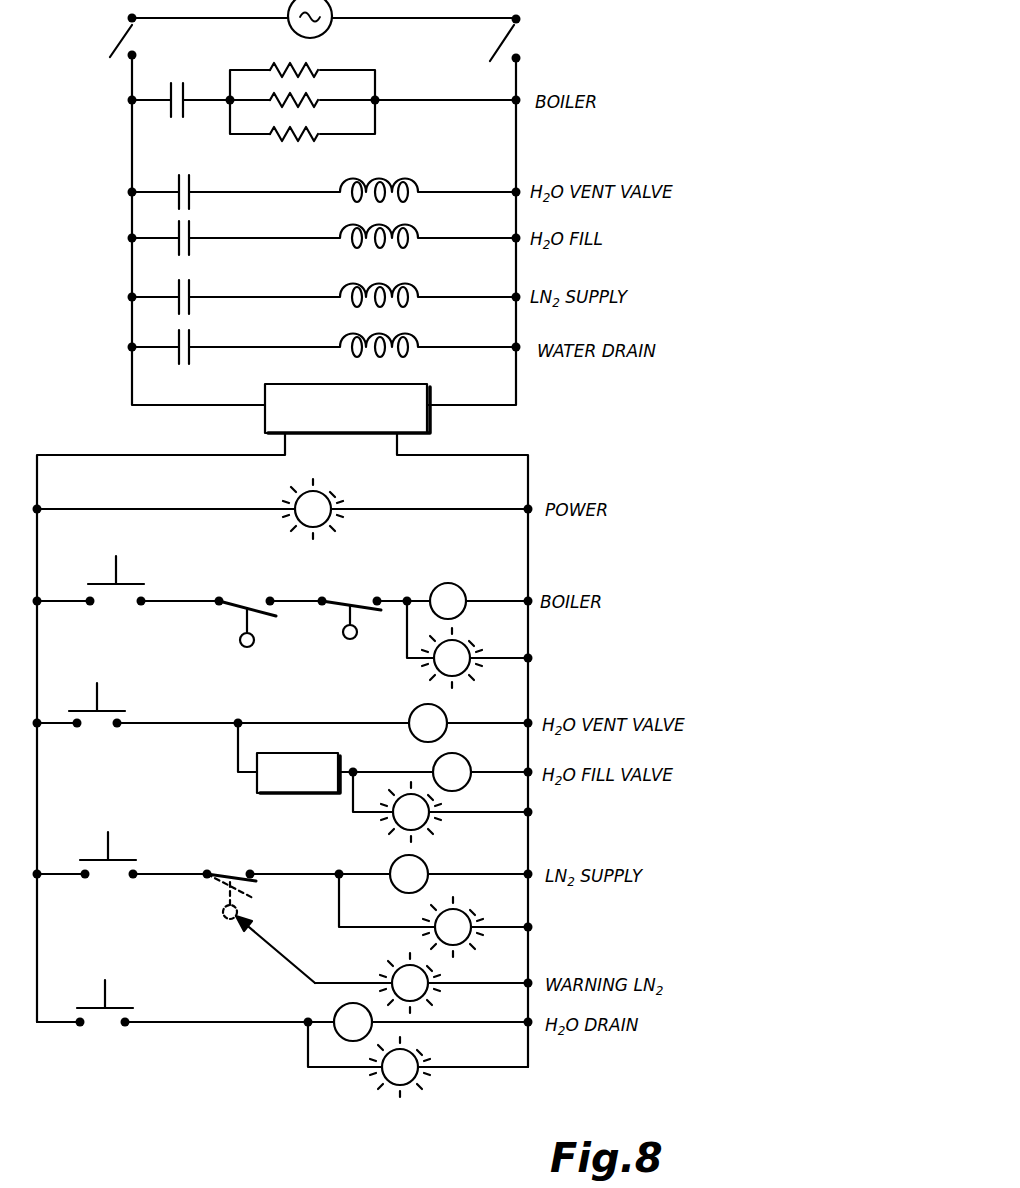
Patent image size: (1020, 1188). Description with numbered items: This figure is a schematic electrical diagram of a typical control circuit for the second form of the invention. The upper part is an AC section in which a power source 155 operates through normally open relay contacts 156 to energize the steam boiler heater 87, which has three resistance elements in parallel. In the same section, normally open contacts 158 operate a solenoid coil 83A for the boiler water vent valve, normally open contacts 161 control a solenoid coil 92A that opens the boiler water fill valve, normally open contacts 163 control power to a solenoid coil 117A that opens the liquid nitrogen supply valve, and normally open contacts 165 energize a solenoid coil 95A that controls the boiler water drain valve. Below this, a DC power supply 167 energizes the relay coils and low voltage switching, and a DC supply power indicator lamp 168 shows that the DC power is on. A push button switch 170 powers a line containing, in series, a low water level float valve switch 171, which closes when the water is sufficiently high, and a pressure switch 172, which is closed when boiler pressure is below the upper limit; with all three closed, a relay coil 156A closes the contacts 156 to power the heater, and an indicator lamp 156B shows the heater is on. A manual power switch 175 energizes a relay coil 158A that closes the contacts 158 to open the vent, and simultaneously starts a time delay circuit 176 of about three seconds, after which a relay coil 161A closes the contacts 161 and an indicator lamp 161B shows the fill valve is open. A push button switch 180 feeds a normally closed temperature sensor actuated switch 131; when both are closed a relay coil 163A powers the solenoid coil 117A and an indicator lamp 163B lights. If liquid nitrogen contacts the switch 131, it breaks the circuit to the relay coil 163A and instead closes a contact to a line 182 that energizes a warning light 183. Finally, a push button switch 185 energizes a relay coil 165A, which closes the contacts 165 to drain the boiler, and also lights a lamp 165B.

The power source 155 is at (330, 30).
The steam boiler heater 87 is at (289, 68).
The normally open relay contacts 156 is at (185, 107).
The normally open contacts 158 is at (192, 180).
The normally open contacts 161 is at (192, 228).
The normally open contacts 163 is at (192, 287).
The normally open contacts 165 is at (192, 339).
The solenoid coil 83A is at (388, 182).
The solenoid coil 92A is at (412, 234).
The solenoid coil 117A is at (415, 294).
The solenoid coil 95A is at (423, 342).
The DC power supply 167 is at (427, 386).
The DC supply power indicator lamp 168 is at (338, 497).
The push button switch 170 is at (122, 572).
The low water level float valve switch 171 is at (245, 594).
The series pressure switch 172 is at (350, 594).
The relay coil 156A is at (459, 586).
The indicator lamp 156B is at (473, 647).
The manual power switch 175 is at (104, 698).
The relay coil 158A is at (413, 710).
The time delay circuit 176 is at (278, 796).
The relay coil 161A is at (433, 763).
The indicator lamp 161B is at (432, 818).
The push button switch 180 is at (116, 850).
The temperature sensor actuated switch 131 is at (232, 868).
The line 182 is at (280, 953).
The relay coil 163A is at (430, 858).
The indicator lamp 163B is at (435, 918).
The warning light 183 is at (430, 976).
The push button switch 185 is at (112, 998).
The relay coil 165A is at (330, 1015).
The lamp 165B is at (422, 1055).